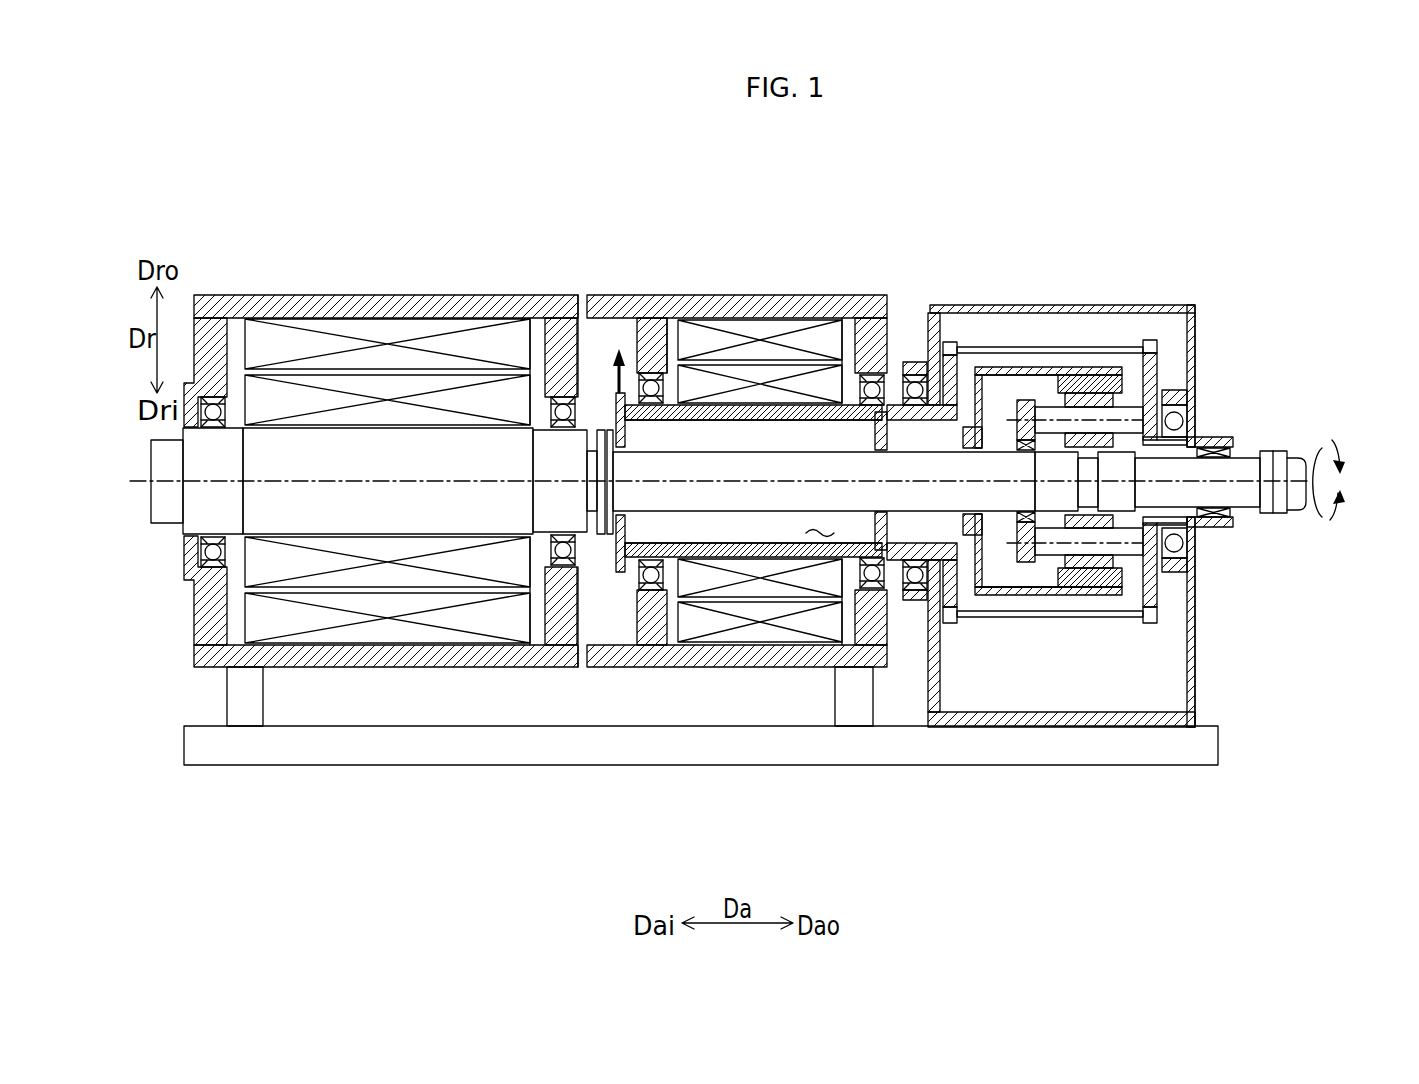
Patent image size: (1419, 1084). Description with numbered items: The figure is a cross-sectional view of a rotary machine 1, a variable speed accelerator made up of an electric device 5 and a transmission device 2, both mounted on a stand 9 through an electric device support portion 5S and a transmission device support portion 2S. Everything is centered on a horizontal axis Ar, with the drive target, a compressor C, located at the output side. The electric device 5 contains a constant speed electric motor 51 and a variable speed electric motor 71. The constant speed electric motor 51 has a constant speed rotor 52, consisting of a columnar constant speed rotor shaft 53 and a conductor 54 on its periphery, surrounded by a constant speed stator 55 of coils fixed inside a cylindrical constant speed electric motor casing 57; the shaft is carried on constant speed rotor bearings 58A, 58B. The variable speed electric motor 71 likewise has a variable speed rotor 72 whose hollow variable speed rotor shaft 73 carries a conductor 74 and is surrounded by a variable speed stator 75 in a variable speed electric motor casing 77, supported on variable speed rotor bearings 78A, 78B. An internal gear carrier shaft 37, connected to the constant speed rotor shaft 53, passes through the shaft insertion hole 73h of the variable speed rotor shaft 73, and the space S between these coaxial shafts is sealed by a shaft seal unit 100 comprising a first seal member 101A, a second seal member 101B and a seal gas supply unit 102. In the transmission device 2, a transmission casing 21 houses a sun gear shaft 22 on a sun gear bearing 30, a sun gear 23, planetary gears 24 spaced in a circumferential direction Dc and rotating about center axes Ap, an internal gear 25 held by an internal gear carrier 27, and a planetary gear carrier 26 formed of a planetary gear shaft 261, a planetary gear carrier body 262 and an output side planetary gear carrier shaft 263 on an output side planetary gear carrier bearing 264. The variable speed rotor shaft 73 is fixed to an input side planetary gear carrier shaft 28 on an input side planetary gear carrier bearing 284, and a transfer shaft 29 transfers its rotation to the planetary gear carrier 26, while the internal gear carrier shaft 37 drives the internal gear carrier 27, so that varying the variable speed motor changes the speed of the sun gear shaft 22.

The rotary machine 1 is at (962, 250).
The transmission device 2 is at (1142, 278).
The transmission device support portion 2S is at (1196, 694).
The electric device 5 is at (519, 275).
The electric device support portion 5S is at (272, 700).
The stand 9 is at (1220, 746).
The transmission casing 21 is at (985, 366).
The sun gear shaft 22 is at (1222, 528).
The sun gear 23 is at (1160, 624).
The planetary gears 24 is at (1031, 400).
The internal gear 25 is at (1080, 366).
The planetary gear carrier 26 is at (1182, 392).
The internal gear carrier 27 is at (1050, 597).
The input side planetary gear carrier shaft 28 is at (935, 625).
The transfer shaft 29 is at (950, 377).
The sun gear bearing 30 is at (1232, 524).
The internal gear carrier shaft 37 is at (780, 514).
The constant speed electric motor 51 is at (263, 294).
The constant speed rotor 52 is at (382, 358).
The constant speed rotor shaft 53 is at (345, 536).
The conductor 54 is at (415, 590).
The constant speed stator 55 is at (450, 656).
The constant speed electric motor casing 57 is at (304, 286).
The constant speed rotor bearing 58A is at (211, 569).
The constant speed rotor bearing 58B is at (561, 567).
The variable speed electric motor 71 is at (758, 280).
The variable speed rotor 72 is at (795, 344).
The variable speed rotor shaft 73 is at (720, 559).
The shaft insertion hole 73h is at (718, 432).
The conductor 74 is at (740, 600).
The variable speed stator 75 is at (705, 646).
The variable speed electric motor casing 77 is at (697, 318).
The variable speed rotor bearing 78A is at (655, 592).
The variable speed rotor bearing 78B is at (884, 590).
The shaft seal unit 100 is at (603, 560).
The first seal member 101A is at (602, 420).
The second seal member 101B is at (879, 430).
The seal gas supply unit 102 is at (622, 412).
The planetary gear shaft 261 is at (1065, 374).
The planetary gear carrier body 262 is at (1152, 344).
The output side planetary gear carrier shaft 263 is at (1196, 420).
The output side planetary gear carrier bearing 264 is at (1150, 405).
The input side planetary gear carrier bearing 284 is at (915, 361).
The space S is at (826, 540).
The center axis Ap is at (1160, 418).
The compressor C is at (1312, 455).
The axis Ar is at (1345, 456).
The circumferential direction Dc is at (1325, 520).